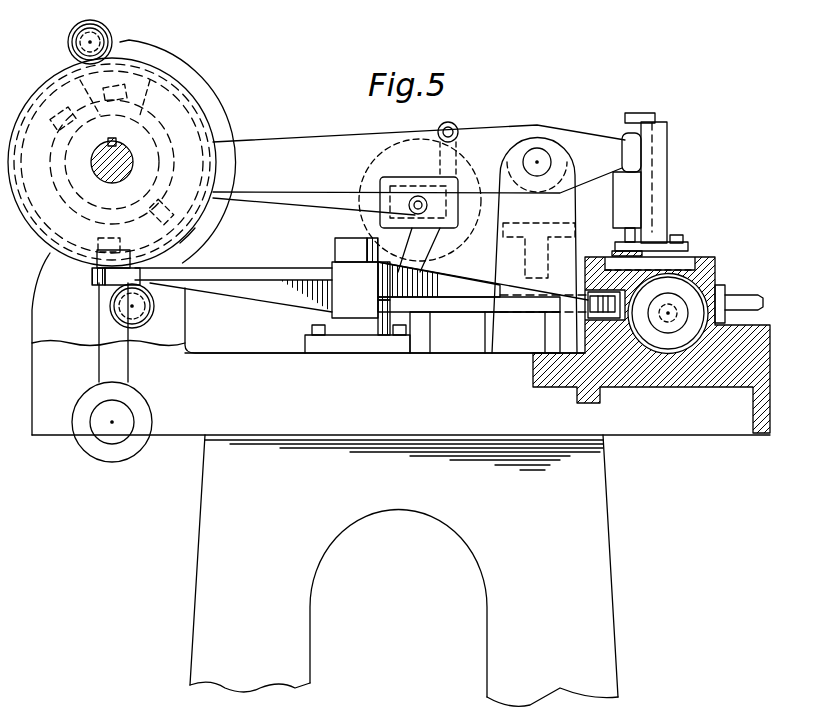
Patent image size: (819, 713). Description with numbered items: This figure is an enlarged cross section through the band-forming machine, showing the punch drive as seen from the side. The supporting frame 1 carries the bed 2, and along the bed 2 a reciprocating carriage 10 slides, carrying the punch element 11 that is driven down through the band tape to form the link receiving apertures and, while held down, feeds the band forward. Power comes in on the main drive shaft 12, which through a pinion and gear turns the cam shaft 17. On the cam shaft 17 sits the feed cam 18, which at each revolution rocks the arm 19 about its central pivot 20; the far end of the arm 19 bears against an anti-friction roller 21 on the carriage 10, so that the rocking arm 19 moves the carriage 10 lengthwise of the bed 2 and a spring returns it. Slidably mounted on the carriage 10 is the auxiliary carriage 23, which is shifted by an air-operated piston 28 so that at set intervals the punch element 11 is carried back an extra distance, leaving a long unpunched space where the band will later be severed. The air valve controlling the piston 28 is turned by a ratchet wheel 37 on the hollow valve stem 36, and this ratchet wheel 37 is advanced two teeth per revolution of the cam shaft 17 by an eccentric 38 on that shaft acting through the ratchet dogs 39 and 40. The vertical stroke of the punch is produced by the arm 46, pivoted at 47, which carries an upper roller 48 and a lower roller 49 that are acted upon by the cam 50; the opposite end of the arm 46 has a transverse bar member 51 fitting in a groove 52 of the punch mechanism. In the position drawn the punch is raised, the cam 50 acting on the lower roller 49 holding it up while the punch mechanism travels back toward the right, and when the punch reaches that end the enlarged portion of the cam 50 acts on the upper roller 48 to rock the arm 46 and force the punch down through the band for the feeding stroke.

The supporting frame 1 is at (590, 468).
The bed 2 is at (770, 434).
The reciprocating carriage 10 is at (680, 272).
The punch element 11 is at (636, 236).
The main drive shaft 12 is at (100, 430).
The cam shaft 17 is at (102, 176).
The feed cam 18 is at (206, 226).
The arm 19 is at (268, 292).
The pivot 20 is at (322, 315).
The anti-friction roller 21 is at (592, 310).
The auxiliary carriage 23 is at (718, 263).
The piston 28 is at (672, 348).
The hollow valve stem 36 is at (423, 213).
The ratchet wheel 37 is at (452, 250).
The eccentric 38 is at (152, 125).
The ratchet dog 39 is at (442, 126).
The ratchet dog 40 is at (430, 286).
The arm 46 is at (480, 133).
The pivot 47 is at (538, 152).
The upper roller 48 is at (112, 32).
The lower roller 49 is at (147, 312).
The cam 50 is at (200, 78).
The transverse bar member 51 is at (624, 140).
The groove 52 is at (643, 135).